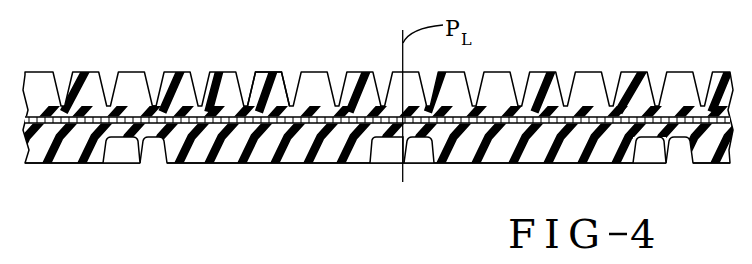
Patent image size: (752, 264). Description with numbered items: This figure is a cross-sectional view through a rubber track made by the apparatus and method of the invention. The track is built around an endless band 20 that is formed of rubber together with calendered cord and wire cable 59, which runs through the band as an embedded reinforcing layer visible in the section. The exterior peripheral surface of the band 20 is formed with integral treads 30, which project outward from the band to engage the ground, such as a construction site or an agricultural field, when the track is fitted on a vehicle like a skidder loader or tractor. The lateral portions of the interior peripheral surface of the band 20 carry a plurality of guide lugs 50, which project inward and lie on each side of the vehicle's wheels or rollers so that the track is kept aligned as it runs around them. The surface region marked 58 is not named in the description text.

The endless band 20 is at (477, 133).
The treads 30 is at (268, 150).
The guide lugs 50 is at (260, 78).
The intermediate layer surface 58 is at (586, 118).
The calendered cord and wire cable 59 is at (147, 116).